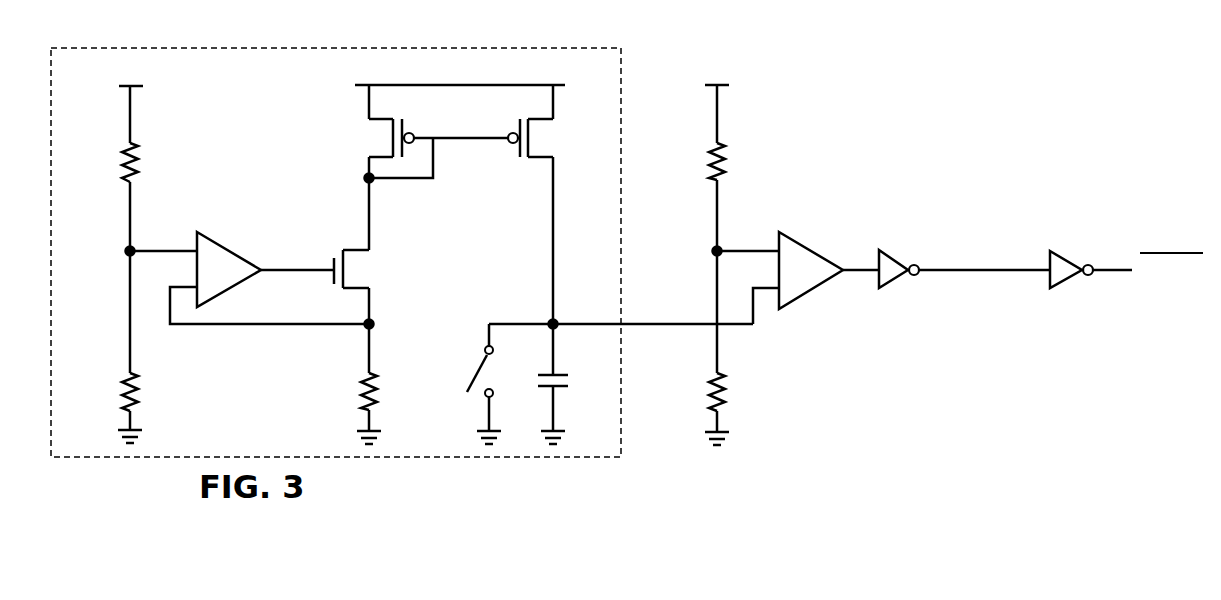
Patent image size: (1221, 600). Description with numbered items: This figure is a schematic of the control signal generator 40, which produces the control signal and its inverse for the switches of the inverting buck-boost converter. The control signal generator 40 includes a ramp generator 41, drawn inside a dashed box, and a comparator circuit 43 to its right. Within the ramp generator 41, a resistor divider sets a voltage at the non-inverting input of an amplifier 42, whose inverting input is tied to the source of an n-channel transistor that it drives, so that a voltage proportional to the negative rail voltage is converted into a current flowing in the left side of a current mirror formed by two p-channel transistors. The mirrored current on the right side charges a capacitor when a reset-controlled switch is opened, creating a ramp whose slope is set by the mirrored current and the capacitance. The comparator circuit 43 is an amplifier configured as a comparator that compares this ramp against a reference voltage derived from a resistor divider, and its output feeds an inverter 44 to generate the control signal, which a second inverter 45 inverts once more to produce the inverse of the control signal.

The control signal generator 40 is at (835, 90).
The ramp generator 41 is at (88, 48).
The amplifier 42 is at (228, 241).
The comparator circuit 43 is at (812, 240).
The inverter 44 is at (889, 284).
The inverter 45 is at (1060, 288).